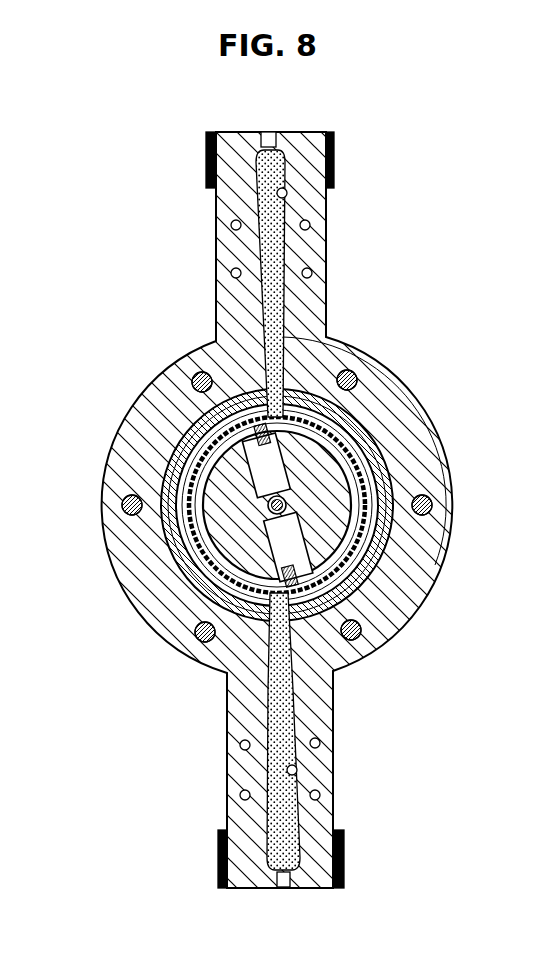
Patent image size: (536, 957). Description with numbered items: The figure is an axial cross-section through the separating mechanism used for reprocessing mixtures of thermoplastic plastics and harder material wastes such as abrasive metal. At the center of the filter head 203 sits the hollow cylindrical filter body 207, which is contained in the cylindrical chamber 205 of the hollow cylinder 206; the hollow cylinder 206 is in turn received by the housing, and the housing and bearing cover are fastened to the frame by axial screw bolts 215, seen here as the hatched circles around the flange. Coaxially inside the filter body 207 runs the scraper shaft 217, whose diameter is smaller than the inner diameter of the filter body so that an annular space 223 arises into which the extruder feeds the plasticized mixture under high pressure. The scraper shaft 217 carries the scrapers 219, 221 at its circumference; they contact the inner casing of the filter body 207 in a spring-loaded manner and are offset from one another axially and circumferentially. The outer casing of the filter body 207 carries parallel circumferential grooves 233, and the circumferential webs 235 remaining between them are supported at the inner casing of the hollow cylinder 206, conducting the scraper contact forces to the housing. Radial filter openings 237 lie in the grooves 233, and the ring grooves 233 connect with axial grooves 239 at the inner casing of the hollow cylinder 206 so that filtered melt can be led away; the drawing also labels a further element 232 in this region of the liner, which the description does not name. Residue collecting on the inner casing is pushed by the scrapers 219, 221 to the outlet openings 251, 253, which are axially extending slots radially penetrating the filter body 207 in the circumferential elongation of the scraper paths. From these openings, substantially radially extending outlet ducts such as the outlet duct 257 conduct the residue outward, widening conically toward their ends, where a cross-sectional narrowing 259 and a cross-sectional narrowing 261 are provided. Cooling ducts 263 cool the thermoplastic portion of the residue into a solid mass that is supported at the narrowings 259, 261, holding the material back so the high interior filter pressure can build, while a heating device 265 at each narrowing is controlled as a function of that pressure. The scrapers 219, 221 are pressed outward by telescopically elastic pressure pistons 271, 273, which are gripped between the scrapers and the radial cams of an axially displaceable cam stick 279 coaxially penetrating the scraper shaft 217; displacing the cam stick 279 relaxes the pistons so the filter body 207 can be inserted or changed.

The filter head 203 is at (383, 315).
The cylindrical chamber 205 is at (400, 420).
The hollow cylinder 206 is at (342, 432).
The filter body 207 is at (397, 463).
The axial screw bolts 215 is at (194, 376).
The scraper shaft 217 is at (412, 570).
The scraper 219 is at (198, 349).
The scraper 221 is at (268, 548).
The annular space 223 is at (182, 552).
The retainer ring 232 is at (162, 462).
The circumferential grooves 233 is at (385, 483).
The circumferential webs 235 is at (372, 396).
The radial filter openings 237 is at (378, 540).
The axial grooves 239 is at (396, 500).
The outlet opening 251 is at (223, 333).
The outlet opening 253 is at (224, 677).
The outlet duct 257 is at (287, 193).
The cross-sectional narrowing 259 is at (268, 140).
The cross-sectional narrowing 261 is at (292, 888).
The cooling ducts 263 is at (231, 225).
The heating device 265 is at (335, 160).
The pressure piston 271 is at (178, 440).
The pressure piston 273 is at (335, 650).
The cam stick 279 is at (288, 503).